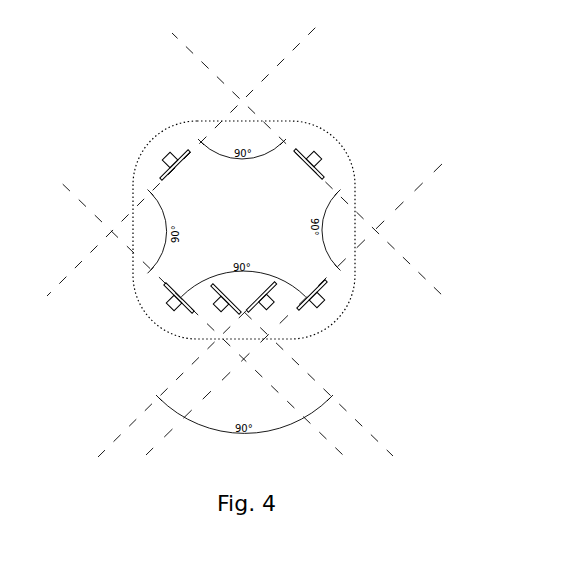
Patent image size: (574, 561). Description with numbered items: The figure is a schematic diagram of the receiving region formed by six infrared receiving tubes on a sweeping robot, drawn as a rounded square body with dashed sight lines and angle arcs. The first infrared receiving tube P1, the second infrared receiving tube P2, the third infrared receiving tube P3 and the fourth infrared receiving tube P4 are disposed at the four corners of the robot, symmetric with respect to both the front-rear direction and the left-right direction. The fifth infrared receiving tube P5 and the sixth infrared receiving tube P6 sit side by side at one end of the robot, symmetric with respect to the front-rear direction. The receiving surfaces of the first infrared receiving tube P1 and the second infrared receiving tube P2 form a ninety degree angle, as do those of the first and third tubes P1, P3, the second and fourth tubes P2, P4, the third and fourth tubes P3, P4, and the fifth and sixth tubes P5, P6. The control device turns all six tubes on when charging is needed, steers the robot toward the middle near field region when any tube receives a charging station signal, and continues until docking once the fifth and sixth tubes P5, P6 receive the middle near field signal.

The first infrared receiving tube P1 is at (177, 150).
The second infrared receiving tube P2 is at (316, 152).
The third infrared receiving tube P3 is at (170, 312).
The fourth infrared receiving tube P4 is at (322, 304).
The fifth infrared receiving tube P5 is at (224, 312).
The sixth infrared receiving tube P6 is at (259, 312).